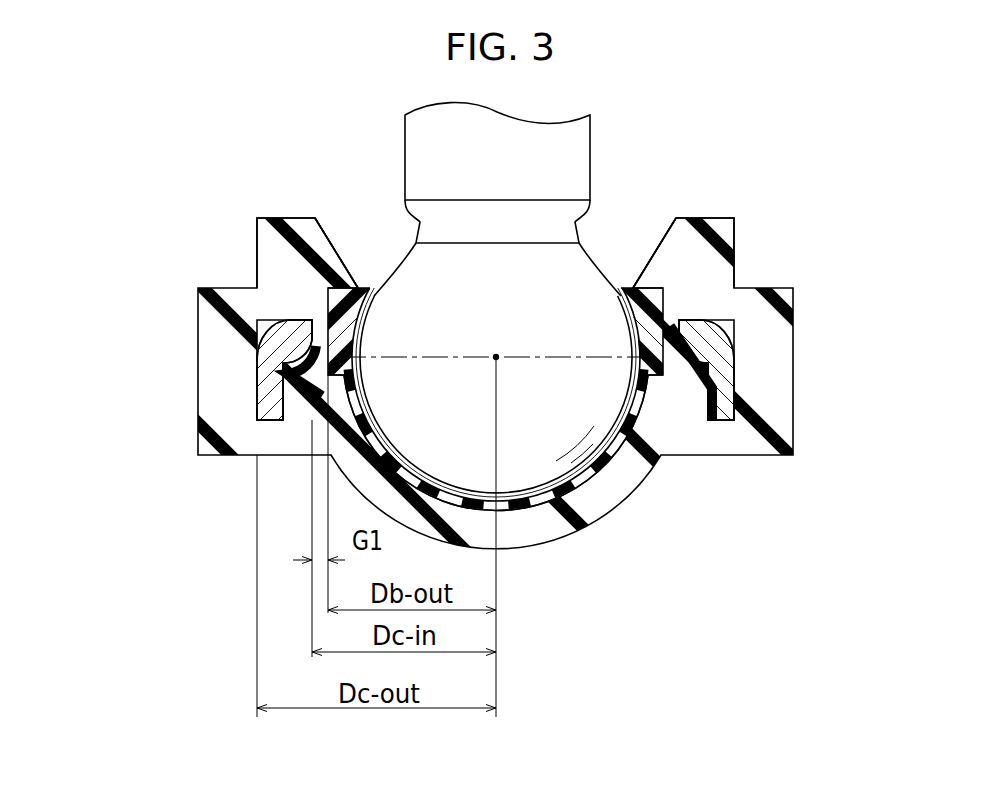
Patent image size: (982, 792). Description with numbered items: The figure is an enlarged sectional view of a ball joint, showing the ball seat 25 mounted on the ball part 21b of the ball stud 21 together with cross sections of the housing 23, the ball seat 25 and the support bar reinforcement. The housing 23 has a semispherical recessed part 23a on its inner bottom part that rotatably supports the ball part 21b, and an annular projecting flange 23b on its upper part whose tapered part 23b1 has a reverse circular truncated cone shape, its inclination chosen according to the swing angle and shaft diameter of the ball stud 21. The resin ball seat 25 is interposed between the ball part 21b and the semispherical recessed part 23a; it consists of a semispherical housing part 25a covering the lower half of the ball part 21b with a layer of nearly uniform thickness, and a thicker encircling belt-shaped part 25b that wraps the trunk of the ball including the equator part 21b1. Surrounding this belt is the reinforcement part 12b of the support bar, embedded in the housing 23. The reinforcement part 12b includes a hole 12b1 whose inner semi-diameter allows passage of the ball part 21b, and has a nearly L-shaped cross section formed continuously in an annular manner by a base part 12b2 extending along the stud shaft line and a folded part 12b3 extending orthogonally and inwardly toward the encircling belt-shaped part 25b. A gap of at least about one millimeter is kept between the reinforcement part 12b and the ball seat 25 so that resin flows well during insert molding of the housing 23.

The ball stud 21 is at (582, 152).
The ball part 21b is at (437, 328).
The equator part 21b1 is at (527, 352).
The housing 23 is at (230, 426).
The semispherical recessed part 23a is at (608, 460).
The projecting flange 23b is at (703, 253).
The tapered part 23b1 is at (662, 237).
The ball seat 25 is at (545, 497).
The housing part 25a is at (563, 472).
The encircling belt-shaped part 25b is at (673, 312).
The reinforcement part 12b is at (108, 300).
The hole 12b1 is at (313, 322).
The base part 12b2 is at (280, 388).
The folded part 12b3 is at (283, 335).